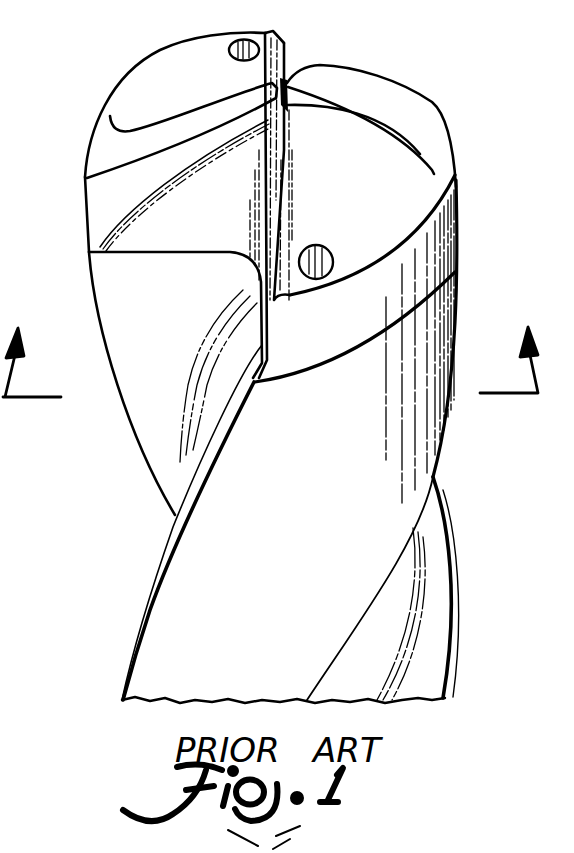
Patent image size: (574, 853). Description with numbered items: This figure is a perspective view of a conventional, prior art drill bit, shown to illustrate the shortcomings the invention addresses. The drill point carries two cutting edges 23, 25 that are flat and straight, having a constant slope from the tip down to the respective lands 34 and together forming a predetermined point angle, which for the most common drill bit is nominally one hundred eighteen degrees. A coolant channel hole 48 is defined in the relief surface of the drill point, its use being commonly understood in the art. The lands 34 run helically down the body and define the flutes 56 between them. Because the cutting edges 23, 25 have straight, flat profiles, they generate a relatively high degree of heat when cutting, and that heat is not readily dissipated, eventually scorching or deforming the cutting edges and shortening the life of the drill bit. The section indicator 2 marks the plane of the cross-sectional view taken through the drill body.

The cutting edge 23 is at (386, 34).
The cutting edge 25 is at (107, 177).
The coolant channel hole 48 is at (243, 40).
The flute 56 is at (155, 430).
The land 34 is at (288, 582).
The section line 2- 2 is at (270, 585).